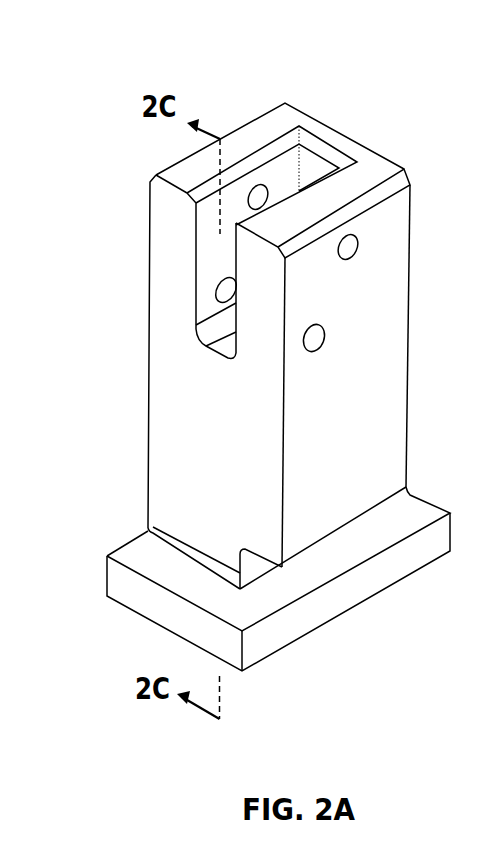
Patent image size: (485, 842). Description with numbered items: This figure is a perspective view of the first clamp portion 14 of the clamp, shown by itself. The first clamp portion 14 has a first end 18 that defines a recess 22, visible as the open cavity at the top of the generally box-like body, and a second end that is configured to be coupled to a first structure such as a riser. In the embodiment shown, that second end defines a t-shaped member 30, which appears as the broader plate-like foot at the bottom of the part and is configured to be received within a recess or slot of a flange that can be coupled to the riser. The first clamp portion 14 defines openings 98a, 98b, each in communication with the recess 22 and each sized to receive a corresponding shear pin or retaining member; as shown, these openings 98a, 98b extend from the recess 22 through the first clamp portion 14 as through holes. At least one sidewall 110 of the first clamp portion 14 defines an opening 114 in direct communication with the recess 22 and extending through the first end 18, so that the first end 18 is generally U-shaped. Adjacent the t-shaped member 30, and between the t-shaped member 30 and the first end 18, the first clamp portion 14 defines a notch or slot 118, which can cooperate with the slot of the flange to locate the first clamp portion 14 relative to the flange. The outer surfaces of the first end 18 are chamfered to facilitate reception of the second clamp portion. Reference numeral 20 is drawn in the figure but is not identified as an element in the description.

The first clamp portion 14 is at (256, 358).
The first end 18 is at (256, 358).
The base assembly 20 is at (292, 561).
The recess 22 is at (274, 137).
The t-shaped member 30 is at (380, 577).
The opening 98a is at (256, 188).
The opening 98b is at (323, 335).
The sidewall 110 is at (155, 221).
The opening 114 is at (234, 308).
The notch or slot 118 is at (242, 549).